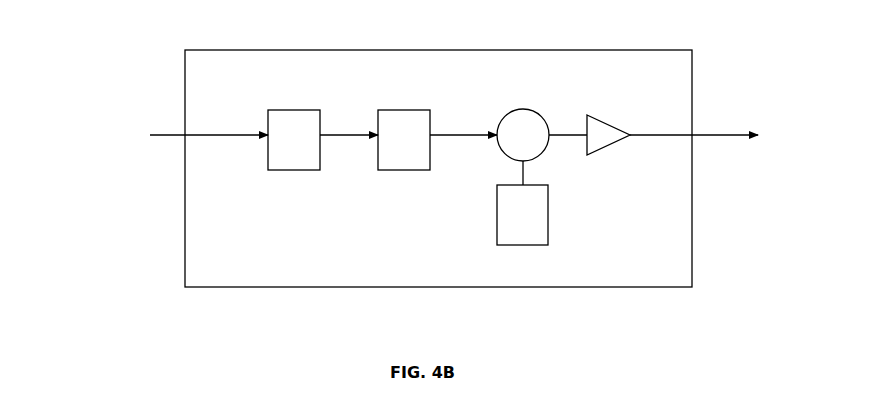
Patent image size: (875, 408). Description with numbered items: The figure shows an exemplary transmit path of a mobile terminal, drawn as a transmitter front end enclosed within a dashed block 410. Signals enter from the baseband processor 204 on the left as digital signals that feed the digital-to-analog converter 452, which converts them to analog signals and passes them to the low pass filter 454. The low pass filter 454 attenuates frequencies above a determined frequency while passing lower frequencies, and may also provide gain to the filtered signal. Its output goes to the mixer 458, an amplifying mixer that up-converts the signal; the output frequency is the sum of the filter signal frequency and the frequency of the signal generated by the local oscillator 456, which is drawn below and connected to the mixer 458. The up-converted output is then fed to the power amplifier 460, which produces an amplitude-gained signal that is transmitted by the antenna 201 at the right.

The transmitter circuit 410 is at (410, 50).
The digital-to-analog converter 452 is at (268, 116).
The low pass filter 454 is at (378, 116).
The local oscillator 456 is at (497, 189).
The mixer 458 is at (503, 117).
The power amplifier 460 is at (627, 100).
The baseband processor 204 is at (89, 178).
The antenna 201 is at (823, 166).